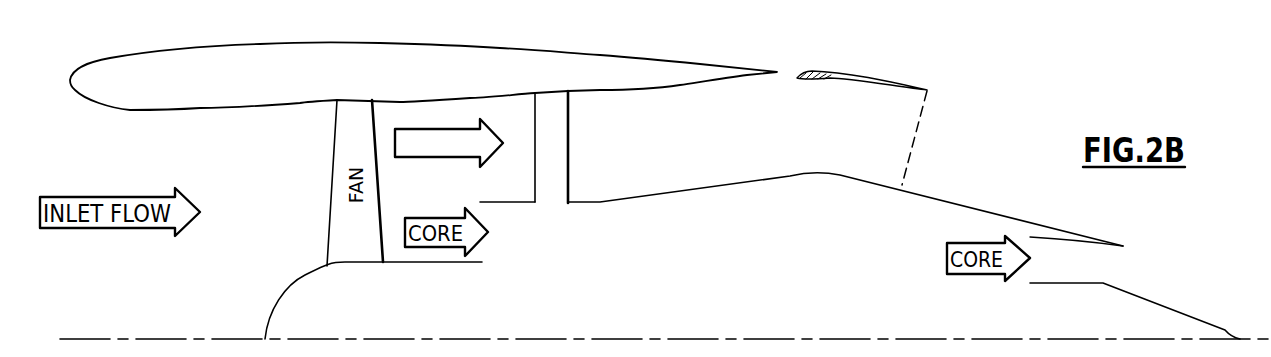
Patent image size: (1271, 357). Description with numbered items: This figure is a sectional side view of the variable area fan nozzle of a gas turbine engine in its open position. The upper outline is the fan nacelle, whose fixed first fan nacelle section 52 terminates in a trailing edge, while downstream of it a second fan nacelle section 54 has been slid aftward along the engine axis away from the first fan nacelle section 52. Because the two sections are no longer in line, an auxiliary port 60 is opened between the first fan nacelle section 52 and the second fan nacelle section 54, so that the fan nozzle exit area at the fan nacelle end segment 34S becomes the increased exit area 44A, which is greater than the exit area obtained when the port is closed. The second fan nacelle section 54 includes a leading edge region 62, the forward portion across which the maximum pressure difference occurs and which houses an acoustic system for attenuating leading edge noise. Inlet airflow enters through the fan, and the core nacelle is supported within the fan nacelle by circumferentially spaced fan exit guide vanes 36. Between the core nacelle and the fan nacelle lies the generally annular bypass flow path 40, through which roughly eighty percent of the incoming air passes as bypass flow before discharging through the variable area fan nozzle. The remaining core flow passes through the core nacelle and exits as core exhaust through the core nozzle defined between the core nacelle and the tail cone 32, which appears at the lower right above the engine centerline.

The tail cone 32 is at (1174, 307).
The fan exit guide vanes 36 is at (568, 150).
The bypass flow path 40 is at (540, 145).
The fan nozzle exit area (open position) 44A is at (912, 153).
The first fan nacelle section 52 is at (690, 78).
The second fan nacelle section 54 is at (860, 84).
The auxiliary port 60 is at (782, 78).
The leading edge region 62 is at (815, 63).
The fan nacelle end segment 34S is at (927, 90).